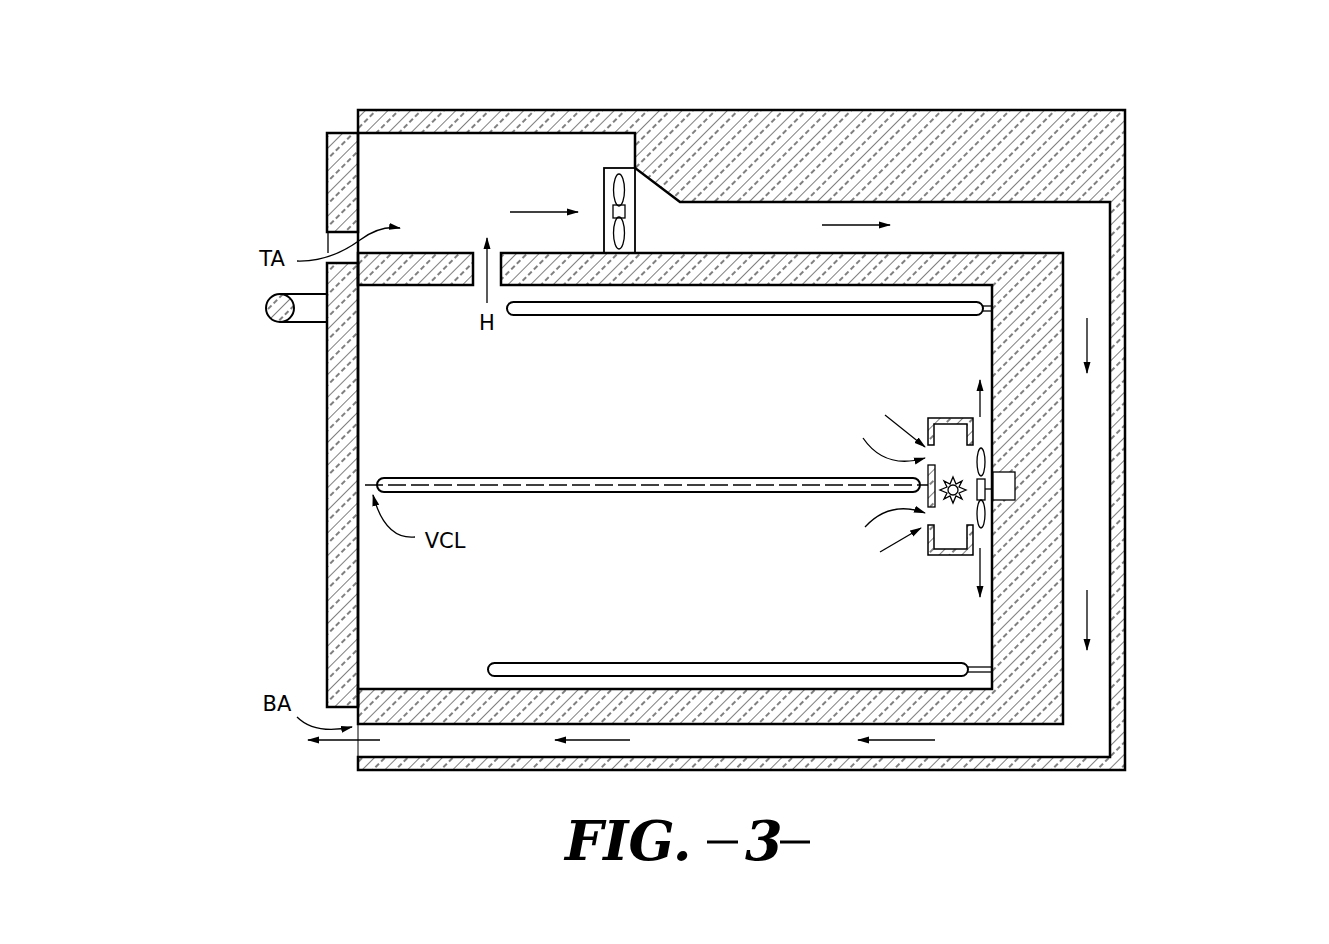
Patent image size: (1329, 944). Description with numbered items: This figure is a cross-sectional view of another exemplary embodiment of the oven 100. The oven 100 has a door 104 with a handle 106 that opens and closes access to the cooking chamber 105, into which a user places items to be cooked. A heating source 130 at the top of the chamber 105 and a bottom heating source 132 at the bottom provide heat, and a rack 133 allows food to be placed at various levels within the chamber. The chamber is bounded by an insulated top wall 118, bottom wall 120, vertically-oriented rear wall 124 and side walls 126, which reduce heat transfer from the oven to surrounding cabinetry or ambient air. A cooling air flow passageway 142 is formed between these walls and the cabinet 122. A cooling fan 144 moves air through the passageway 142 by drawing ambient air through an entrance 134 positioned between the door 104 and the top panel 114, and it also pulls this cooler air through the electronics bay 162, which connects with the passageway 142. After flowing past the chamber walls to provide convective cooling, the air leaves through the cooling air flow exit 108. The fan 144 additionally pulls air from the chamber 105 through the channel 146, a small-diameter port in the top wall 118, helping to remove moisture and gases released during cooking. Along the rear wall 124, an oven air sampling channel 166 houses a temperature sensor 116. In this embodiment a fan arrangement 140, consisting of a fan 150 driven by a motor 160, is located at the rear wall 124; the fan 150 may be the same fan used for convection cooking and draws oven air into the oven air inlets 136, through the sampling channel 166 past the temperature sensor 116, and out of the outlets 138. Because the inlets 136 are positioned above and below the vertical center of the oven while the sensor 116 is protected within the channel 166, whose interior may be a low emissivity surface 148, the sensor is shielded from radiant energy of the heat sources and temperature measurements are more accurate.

The oven 100 is at (1205, 215).
The door 104 is at (342, 372).
The cooking chamber 105 is at (400, 597).
The handle 106 is at (268, 305).
The cooling air flow exit 108 is at (345, 752).
The top panel 114 is at (340, 165).
The temperature sensor 116 is at (960, 497).
The top wall 118 is at (680, 265).
The bottom wall 120 is at (420, 708).
The cabinet 122 is at (880, 133).
The rear wall 124 is at (1050, 293).
The side walls 126 is at (400, 430).
The heating source 130 is at (730, 312).
The bottom heating source 132 is at (655, 665).
The rack 133 is at (590, 483).
The entrance 134 is at (318, 252).
The oven air inlets 136 is at (871, 484).
The outlets 138 is at (974, 410).
The convection fan assembly 140 is at (960, 466).
The cooling air flow passageway 142 is at (1078, 222).
The cooling fan 144 is at (604, 200).
The channel 146 is at (476, 300).
The low emissivity interior surface 148 is at (952, 433).
The fan 150 is at (986, 453).
The motor 160 is at (1004, 484).
The electronics bay 162 is at (468, 150).
The oven air sampling channel 166 is at (957, 530).